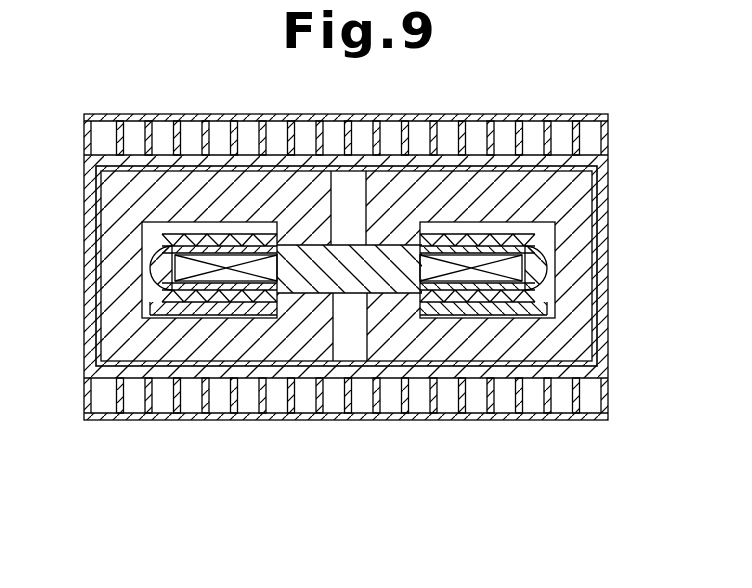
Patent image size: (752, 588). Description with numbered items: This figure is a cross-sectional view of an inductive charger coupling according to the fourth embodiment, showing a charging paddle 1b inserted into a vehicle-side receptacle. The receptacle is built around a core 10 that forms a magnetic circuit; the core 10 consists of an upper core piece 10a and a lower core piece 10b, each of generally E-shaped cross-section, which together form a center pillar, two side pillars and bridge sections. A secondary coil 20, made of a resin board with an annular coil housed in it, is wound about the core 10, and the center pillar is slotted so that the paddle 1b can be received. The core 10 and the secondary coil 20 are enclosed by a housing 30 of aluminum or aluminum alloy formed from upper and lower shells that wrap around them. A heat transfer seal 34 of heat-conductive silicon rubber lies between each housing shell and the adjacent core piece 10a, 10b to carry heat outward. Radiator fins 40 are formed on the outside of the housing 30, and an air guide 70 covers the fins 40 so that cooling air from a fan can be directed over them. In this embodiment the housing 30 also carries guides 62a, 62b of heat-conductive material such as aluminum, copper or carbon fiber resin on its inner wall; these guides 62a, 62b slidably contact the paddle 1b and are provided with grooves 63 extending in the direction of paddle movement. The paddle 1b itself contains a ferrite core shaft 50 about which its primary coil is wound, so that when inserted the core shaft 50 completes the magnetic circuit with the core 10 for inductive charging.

The charging paddle 1b is at (150, 282).
The core 10 is at (93, 191).
The upper core piece 10a is at (346, 124).
The lower core piece 10b is at (122, 373).
The secondary coil 20 is at (137, 307).
The housing 30 is at (85, 241).
The heat transfer seal 34 is at (163, 168).
The radiator fins 40 is at (442, 147).
The ferrite core shaft 50 is at (348, 300).
The guide 62a is at (532, 242).
The guide 62b is at (533, 297).
The grooves 63 is at (502, 233).
The air guide 70 is at (241, 118).